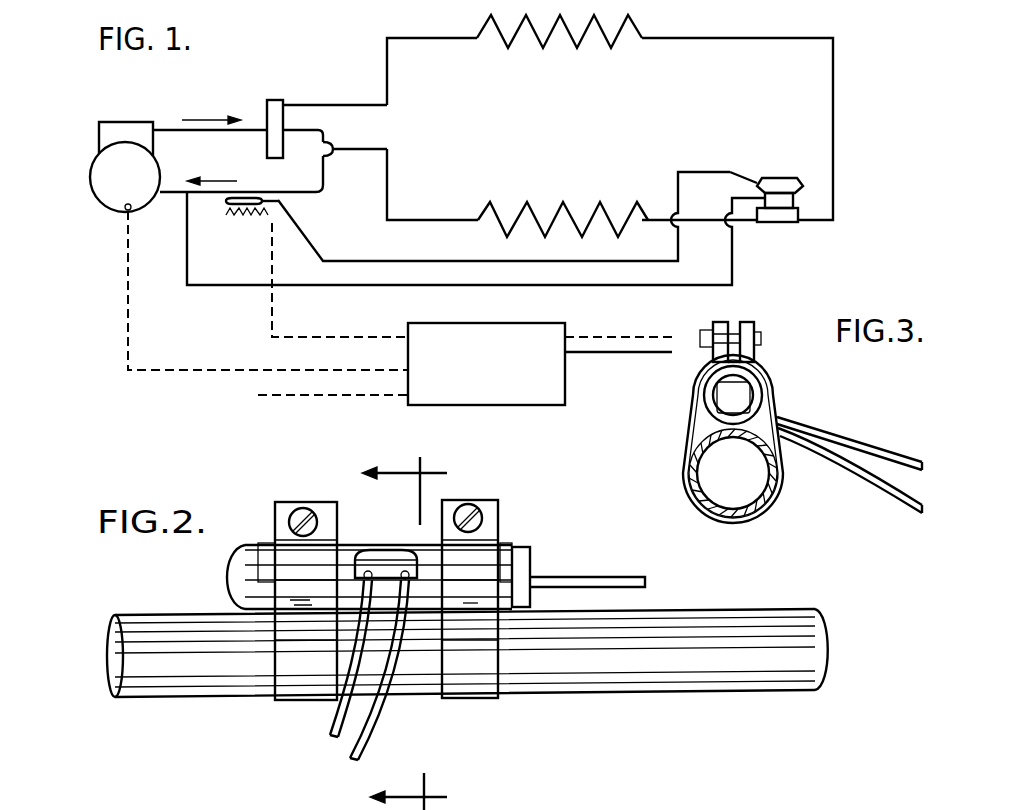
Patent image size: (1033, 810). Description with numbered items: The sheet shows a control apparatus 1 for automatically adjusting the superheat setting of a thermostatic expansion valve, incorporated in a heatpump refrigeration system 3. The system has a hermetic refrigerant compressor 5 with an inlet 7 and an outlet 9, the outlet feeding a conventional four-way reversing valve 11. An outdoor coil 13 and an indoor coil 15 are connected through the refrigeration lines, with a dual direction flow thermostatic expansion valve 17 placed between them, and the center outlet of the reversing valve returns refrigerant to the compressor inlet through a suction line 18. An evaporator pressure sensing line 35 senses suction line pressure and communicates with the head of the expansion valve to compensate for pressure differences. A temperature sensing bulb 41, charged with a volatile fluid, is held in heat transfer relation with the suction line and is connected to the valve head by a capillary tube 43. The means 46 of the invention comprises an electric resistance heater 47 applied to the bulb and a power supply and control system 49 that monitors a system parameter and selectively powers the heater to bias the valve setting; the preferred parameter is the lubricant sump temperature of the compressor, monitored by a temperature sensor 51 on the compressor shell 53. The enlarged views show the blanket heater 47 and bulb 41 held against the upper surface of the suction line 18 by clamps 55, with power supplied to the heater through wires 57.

In FIG. 1, the control apparatus 1 is at (118, 365).
In FIG. 1, the refrigeration system 3 is at (836, 62).
In FIG. 2, the refrigeration system 3 is at (387, 633).
In FIG. 1, the hermetic refrigerant compressor 5 is at (77, 192).
In FIG. 1, the inlet 7 is at (163, 190).
In FIG. 1, the outlet 9 is at (155, 129).
In FIG. 1, the four-way reversing valve 11 is at (275, 101).
In FIG. 1, the outdoor coil 13 is at (475, 47).
In FIG. 1, the indoor coil 15 is at (480, 203).
In FIG. 1, the thermostatic expansion valve 17 is at (780, 224).
In FIG. 1, the suction line 18 is at (331, 193).
In FIG. 3, the suction line 18 is at (700, 450).
In FIG. 2, the suction line 18 is at (640, 692).
In FIG. 1, the evaporator pressure sensing line 35 is at (588, 286).
In FIG. 1, the temperature sensing bulb 41 is at (228, 200).
In FIG. 3, the temperature sensing bulb 41 is at (738, 392).
In FIG. 2, the temperature sensing bulb 41 is at (522, 545).
In FIG. 1, the capillary tube 43 is at (432, 261).
In FIG. 2, the capillary tube 43 is at (586, 577).
In FIG. 1, the means 46 is at (397, 405).
In FIG. 1, the electric resistance heater 47 is at (246, 217).
In FIG. 3, the electric resistance heater 47 is at (748, 362).
In FIG. 2, the electric resistance heater 47 is at (390, 548).
In FIG. 1, the power supply and control system 49 is at (566, 385).
In FIG. 1, the temperature sensor 51 is at (124, 208).
In FIG. 1, the shell 53 is at (95, 157).
In FIG. 3, the clamps 55 is at (784, 490).
In FIG. 2, the clamps 55 is at (303, 677).
In FIG. 3, the wires 57 is at (848, 470).
In FIG. 2, the wires 57 is at (380, 705).